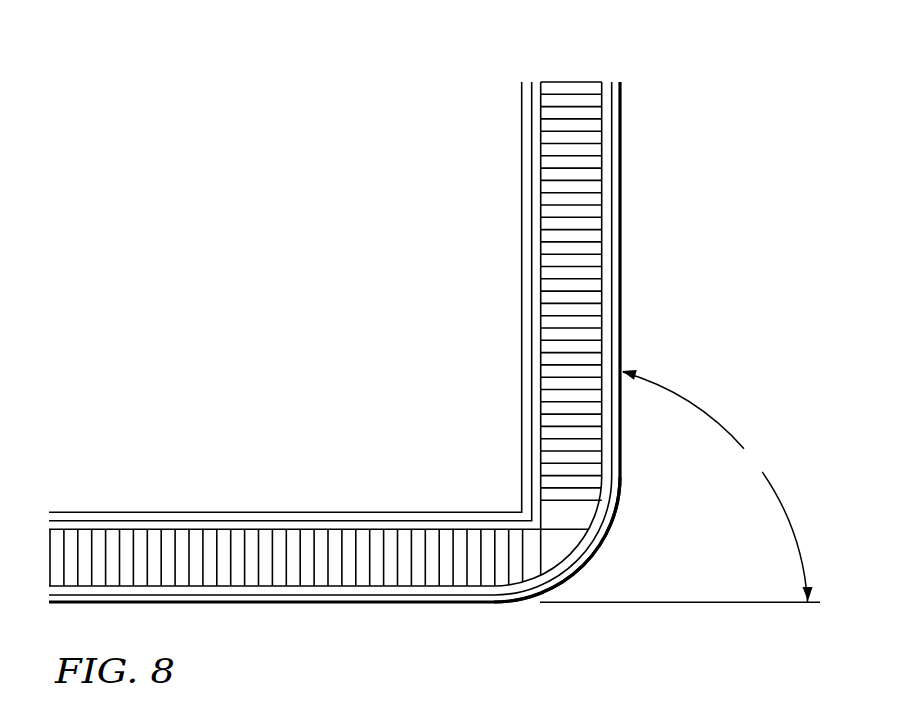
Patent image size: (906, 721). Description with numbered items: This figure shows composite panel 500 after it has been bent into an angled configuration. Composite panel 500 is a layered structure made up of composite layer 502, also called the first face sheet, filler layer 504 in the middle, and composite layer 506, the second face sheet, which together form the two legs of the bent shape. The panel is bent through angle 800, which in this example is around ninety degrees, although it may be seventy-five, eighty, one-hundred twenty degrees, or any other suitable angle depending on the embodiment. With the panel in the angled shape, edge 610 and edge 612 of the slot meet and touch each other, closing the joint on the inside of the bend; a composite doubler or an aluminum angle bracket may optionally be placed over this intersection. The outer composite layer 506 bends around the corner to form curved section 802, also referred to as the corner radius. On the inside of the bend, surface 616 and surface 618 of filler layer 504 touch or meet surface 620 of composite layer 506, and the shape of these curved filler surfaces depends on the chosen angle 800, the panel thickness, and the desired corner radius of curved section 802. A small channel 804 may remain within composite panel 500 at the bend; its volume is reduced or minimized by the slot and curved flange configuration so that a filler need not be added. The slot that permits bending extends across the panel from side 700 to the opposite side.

The composite panel 500 is at (367, 137).
The composite layer 502 is at (520, 118).
The filler layer 504 is at (572, 82).
The composite layer 506 is at (623, 118).
The edge 610 is at (505, 507).
The edge 612 is at (512, 497).
The surface 616 is at (495, 576).
The surface 618 is at (583, 487).
The surface 620 is at (580, 543).
The side 700 is at (616, 512).
The angle 800 is at (732, 428).
The curved section 802 is at (581, 568).
The channel 804 is at (568, 560).